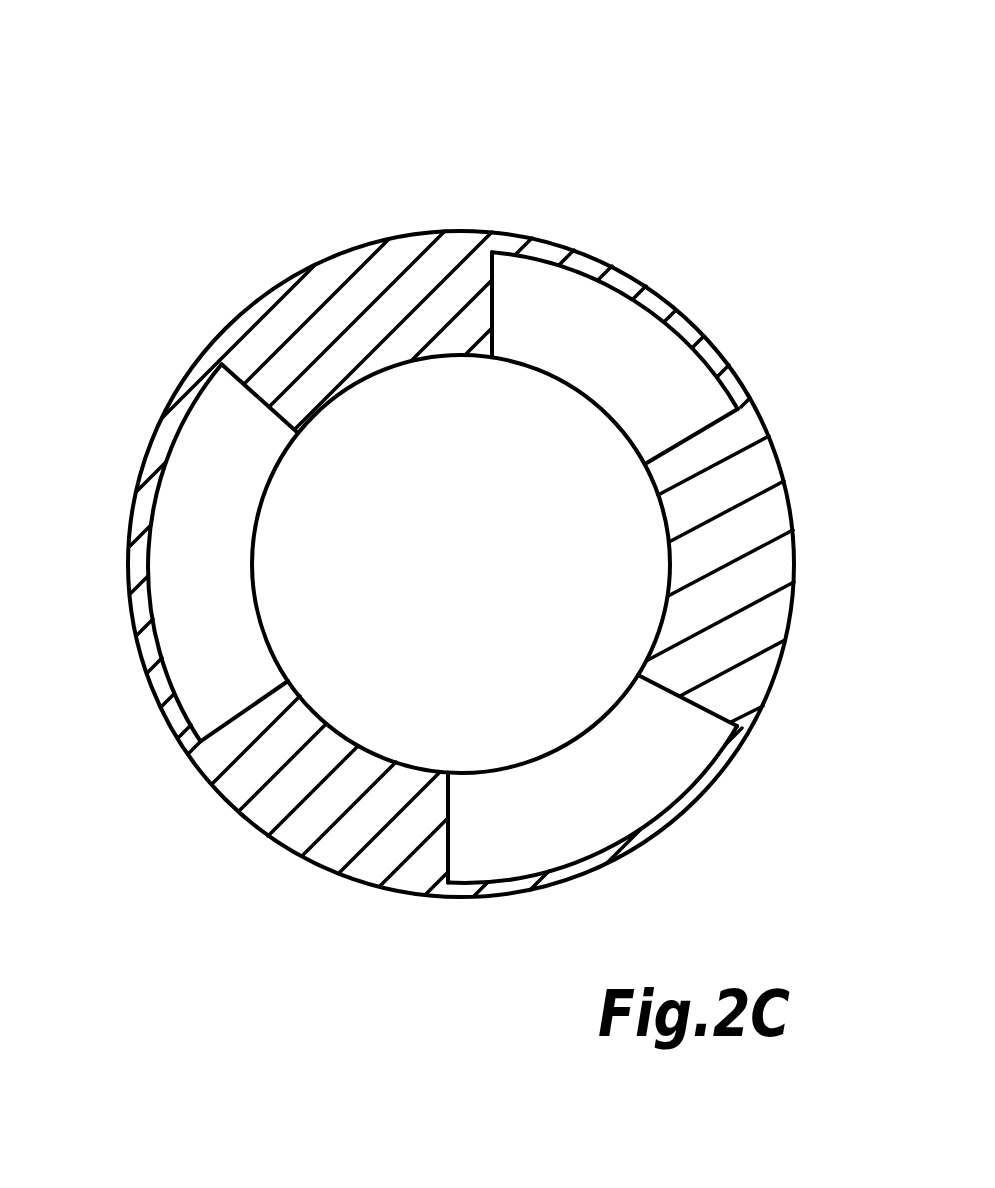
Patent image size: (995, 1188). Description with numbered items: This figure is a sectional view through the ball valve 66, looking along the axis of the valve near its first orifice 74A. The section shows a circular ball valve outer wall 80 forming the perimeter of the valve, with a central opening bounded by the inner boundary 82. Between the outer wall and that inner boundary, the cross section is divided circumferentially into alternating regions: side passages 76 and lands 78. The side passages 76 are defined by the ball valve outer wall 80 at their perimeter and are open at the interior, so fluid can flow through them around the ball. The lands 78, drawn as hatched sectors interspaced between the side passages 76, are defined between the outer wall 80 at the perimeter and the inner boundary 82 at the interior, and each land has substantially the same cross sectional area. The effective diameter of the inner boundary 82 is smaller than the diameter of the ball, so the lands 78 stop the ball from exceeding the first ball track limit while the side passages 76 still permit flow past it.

The ball valve 66 is at (461, 450).
The first orifice 74A is at (267, 483).
The side passages 76 is at (602, 790).
The lands 78 is at (320, 800).
The ball valve outer wall 80 is at (697, 328).
The inner boundary 82 is at (672, 507).